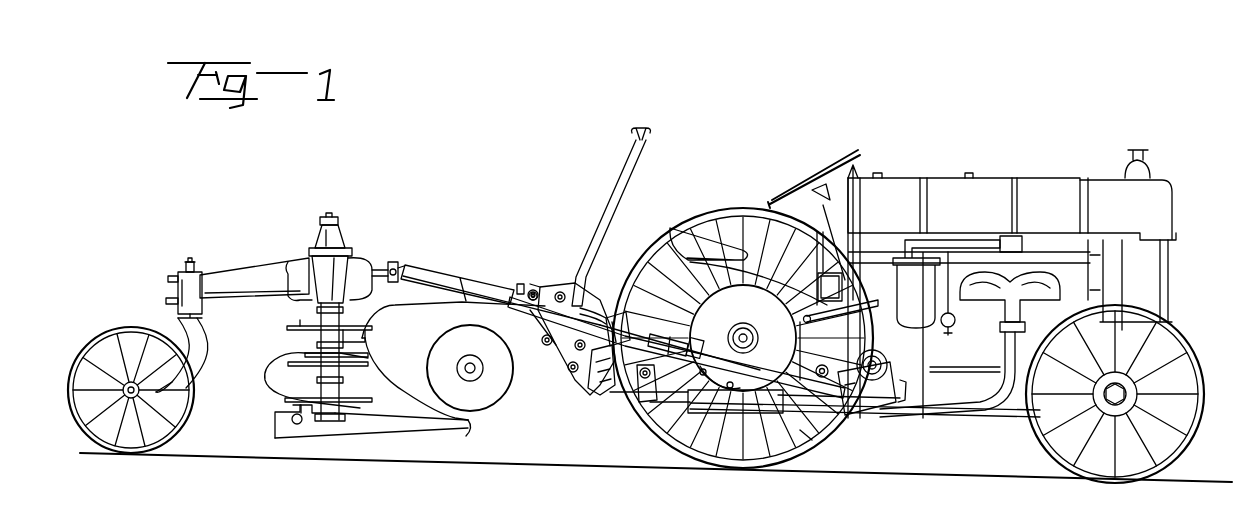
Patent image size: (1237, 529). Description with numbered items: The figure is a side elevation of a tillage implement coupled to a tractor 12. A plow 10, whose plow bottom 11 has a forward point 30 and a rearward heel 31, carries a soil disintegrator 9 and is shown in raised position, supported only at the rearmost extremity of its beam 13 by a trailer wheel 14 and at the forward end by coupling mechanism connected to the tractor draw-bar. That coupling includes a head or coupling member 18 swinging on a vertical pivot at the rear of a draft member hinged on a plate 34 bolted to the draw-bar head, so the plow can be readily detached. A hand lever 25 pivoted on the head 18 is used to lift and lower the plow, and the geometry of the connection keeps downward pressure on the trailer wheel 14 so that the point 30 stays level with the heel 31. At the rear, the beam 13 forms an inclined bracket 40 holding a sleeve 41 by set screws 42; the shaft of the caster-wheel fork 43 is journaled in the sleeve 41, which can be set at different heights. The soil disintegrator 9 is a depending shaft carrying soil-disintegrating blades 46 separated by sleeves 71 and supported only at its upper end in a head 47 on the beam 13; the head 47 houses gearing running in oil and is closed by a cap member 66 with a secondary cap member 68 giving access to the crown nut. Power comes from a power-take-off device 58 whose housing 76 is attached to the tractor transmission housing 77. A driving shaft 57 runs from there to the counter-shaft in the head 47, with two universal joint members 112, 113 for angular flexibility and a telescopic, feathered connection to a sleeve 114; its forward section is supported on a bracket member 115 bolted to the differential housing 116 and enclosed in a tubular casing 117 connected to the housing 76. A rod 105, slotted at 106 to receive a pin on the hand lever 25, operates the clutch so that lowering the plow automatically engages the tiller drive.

The soil disintegrator 9 is at (290, 370).
The plow 10 is at (382, 312).
The plow bottom 11 is at (364, 428).
The tractor 12 is at (996, 185).
The beam 13 is at (250, 276).
The trailer wheel 14 is at (97, 346).
The coupling member 18 is at (600, 392).
The hand lever 25 is at (614, 208).
The point 30 is at (470, 434).
The heel 31 is at (288, 438).
The plate 34 is at (683, 390).
The bracket member 40 is at (166, 300).
The sleeve 41 is at (186, 263).
The set screws 42 is at (168, 279).
The caster-wheel fork 43 is at (187, 348).
The soil-disintegrating blades 46 is at (290, 327).
The head 47 is at (318, 264).
The driving shaft 57 is at (520, 284).
The power-take-off device 58 is at (832, 353).
The cap member 66 is at (320, 232).
The secondary cap member 68 is at (330, 216).
The sleeves 71 is at (341, 374).
The power-take-off housing 76 is at (853, 416).
The transmission housing 77 is at (877, 350).
The rod 105 is at (668, 334).
The slot 106 is at (615, 312).
The universal joint member 112 is at (393, 262).
The universal joint member 113 is at (580, 372).
The sleeve 114 is at (447, 272).
The bracket member 115 is at (681, 372).
The differential housing 116 is at (743, 338).
The tubular casing 117 is at (812, 438).